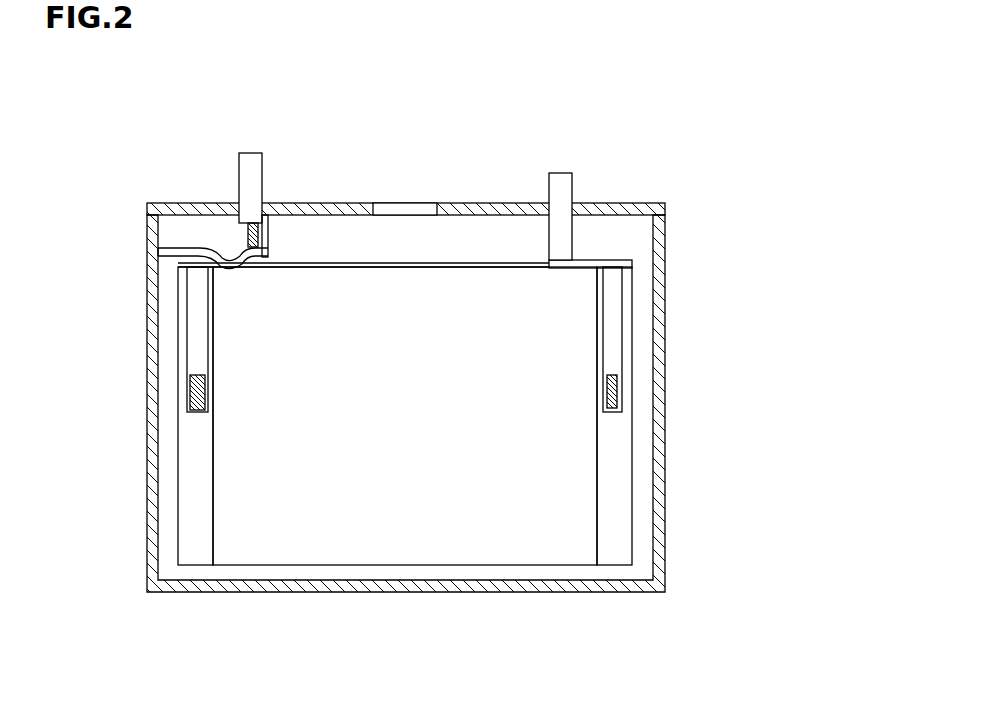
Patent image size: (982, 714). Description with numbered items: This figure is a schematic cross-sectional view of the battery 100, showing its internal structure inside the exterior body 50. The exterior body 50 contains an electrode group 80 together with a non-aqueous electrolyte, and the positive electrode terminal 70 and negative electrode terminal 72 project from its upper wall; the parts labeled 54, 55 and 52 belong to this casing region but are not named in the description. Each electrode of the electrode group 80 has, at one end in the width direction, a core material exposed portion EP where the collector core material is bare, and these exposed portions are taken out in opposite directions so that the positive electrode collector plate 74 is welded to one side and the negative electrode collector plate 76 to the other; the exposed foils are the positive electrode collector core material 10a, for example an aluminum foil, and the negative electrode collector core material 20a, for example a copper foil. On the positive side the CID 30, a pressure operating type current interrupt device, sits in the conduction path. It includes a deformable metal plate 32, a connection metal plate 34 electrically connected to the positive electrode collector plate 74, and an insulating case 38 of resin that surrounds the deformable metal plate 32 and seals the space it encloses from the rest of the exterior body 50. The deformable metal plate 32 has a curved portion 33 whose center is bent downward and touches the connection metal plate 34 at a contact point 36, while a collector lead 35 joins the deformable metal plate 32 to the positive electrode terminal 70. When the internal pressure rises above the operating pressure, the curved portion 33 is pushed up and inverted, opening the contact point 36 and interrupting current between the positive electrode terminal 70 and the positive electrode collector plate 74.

The battery 100 is at (667, 102).
The positive electrode terminal 70 is at (251, 152).
The negative electrode terminal 72 is at (561, 174).
The CID 30 is at (196, 238).
The deformable metal plate 32 is at (189, 243).
The curved portion 33 is at (178, 274).
The connection metal plate 34 is at (255, 267).
The collector lead 35 is at (240, 238).
The contact point 36 is at (232, 264).
The insulating case 38 is at (270, 245).
The electrode group 80 is at (349, 289).
The liquid injection hole 55 is at (430, 203).
The lid 54 is at (500, 203).
The positive electrode collector plate 74 is at (200, 330).
The negative electrode collector plate 76 is at (612, 290).
The exterior body 50 is at (453, 361).
The case body 52 is at (668, 540).
The core material exposed portion EP is at (204, 445).
The positive electrode collector core material 10a is at (193, 556).
The negative electrode collector core material 20a is at (612, 556).